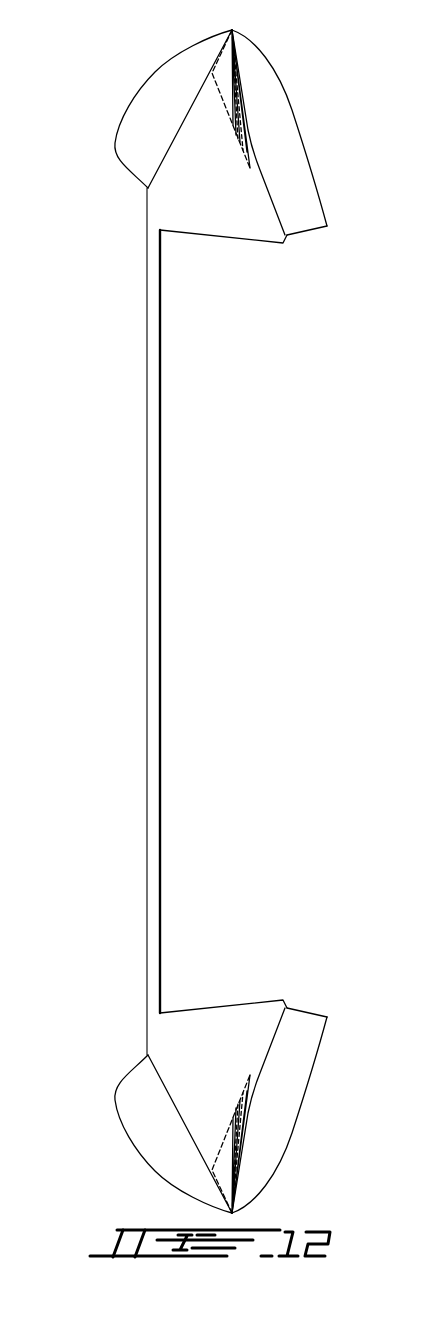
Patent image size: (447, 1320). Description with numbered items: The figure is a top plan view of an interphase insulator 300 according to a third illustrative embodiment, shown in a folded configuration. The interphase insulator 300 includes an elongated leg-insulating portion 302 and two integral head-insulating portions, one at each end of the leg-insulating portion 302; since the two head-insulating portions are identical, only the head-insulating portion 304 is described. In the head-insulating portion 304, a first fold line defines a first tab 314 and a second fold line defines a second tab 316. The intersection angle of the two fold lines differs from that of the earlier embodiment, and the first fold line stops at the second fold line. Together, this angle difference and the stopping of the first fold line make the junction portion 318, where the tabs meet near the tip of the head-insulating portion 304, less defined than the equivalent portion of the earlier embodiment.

The interphase insulator 300 is at (125, 588).
The leg-insulating portion 302 is at (153, 658).
The head-insulating portion 304 is at (220, 238).
The first tab 314 is at (290, 197).
The second tab 316 is at (147, 123).
The junction portion 318 is at (222, 75).